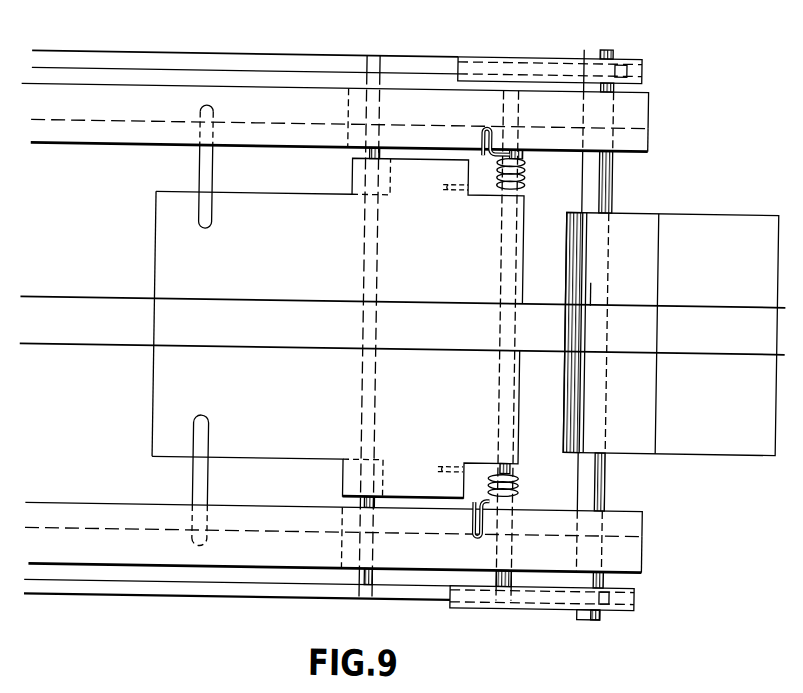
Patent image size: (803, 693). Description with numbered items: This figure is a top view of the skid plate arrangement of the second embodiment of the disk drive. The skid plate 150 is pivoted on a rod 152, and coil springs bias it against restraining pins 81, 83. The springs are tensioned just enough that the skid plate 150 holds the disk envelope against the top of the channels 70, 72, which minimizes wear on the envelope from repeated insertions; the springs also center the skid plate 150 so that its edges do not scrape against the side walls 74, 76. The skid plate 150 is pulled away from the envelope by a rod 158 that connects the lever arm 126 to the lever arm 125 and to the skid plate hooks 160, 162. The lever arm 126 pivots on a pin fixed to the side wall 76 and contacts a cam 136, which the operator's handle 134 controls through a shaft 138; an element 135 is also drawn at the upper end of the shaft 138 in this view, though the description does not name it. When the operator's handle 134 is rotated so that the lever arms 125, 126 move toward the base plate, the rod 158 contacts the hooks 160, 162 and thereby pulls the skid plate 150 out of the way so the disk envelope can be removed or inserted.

The lever arm 125 is at (70, 55).
The lever arm 126 is at (84, 600).
The channel 70 is at (647, 143).
The channel 72 is at (647, 525).
The side wall 74 is at (647, 108).
The side wall 76 is at (647, 560).
The restraining pin 81 is at (195, 169).
The restraining pin 83 is at (193, 481).
The operator's handle 134 is at (684, 209).
The upper clamp block 135 is at (641, 68).
The cam 136 is at (640, 610).
The shaft 138 is at (600, 480).
The skid plate 150 is at (151, 300).
The rod 152 is at (495, 551).
The rod 158 is at (361, 297).
The skid plate hook 160 is at (391, 198).
The skid plate hook 162 is at (387, 459).